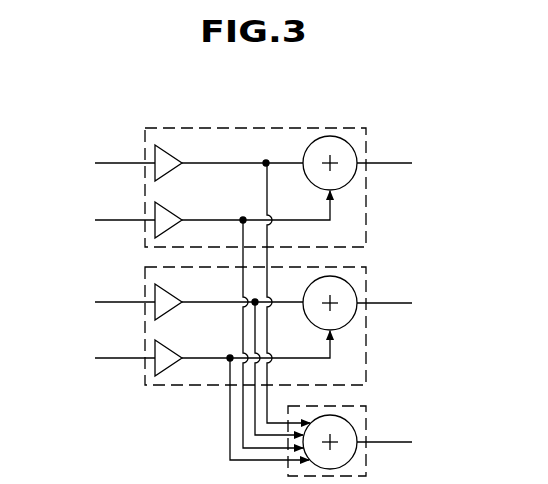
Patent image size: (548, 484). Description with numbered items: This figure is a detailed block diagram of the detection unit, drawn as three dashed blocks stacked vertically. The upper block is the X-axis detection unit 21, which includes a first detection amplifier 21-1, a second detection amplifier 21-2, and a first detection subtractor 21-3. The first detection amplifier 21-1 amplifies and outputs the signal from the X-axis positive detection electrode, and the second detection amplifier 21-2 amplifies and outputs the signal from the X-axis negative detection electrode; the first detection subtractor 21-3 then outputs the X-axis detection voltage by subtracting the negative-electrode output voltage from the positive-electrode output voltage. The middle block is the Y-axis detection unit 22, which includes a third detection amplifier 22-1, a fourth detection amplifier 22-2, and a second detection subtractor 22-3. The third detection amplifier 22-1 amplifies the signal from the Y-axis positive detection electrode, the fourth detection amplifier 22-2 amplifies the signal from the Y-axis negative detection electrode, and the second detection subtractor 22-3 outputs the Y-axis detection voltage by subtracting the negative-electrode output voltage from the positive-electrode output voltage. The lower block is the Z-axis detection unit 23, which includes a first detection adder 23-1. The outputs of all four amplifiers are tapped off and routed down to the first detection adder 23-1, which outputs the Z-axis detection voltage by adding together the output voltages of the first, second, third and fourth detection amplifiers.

The X-axis detection unit 21 is at (367, 184).
The first detection amplifier 21-1 is at (153, 168).
The second detection amplifier 21-2 is at (153, 227).
The first detection subtractor 21-3 is at (330, 136).
The Y-axis detection unit 22 is at (367, 343).
The third detection amplifier 22-1 is at (153, 308).
The fourth detection amplifier 22-2 is at (153, 365).
The second detection subtractor 22-3 is at (330, 276).
The Z-axis detection unit 23 is at (367, 463).
The first detection adder 23-1 is at (330, 415).